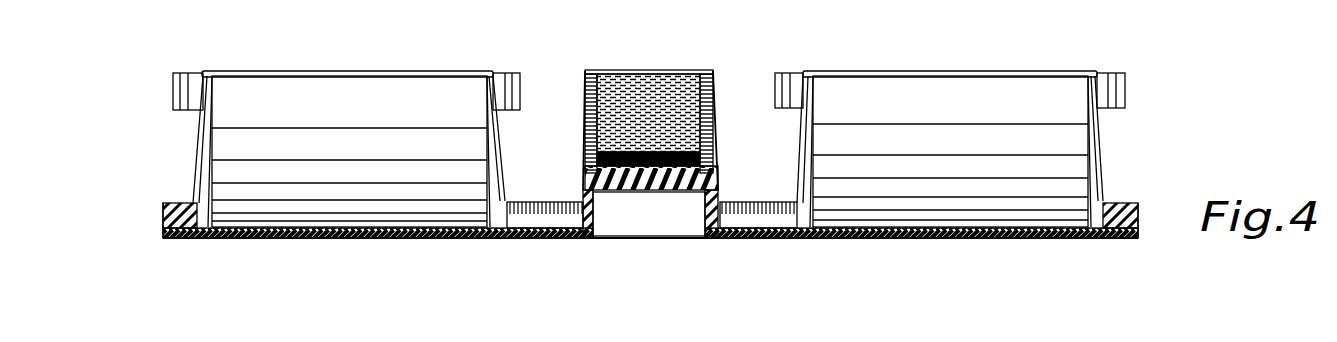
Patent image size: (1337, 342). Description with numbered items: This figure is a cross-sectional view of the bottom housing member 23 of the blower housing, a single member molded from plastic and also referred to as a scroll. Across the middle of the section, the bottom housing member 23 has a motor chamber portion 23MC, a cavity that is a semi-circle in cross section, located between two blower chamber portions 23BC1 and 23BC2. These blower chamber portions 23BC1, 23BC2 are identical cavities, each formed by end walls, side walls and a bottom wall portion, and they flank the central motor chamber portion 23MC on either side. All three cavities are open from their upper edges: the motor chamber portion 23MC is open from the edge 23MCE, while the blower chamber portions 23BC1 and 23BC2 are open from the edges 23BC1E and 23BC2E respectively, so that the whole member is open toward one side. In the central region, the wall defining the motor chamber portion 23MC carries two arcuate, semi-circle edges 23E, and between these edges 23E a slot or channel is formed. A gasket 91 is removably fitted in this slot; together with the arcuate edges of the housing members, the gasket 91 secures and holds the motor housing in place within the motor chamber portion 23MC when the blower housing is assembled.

The bottom housing member 23 is at (777, 43).
The blower chamber portion 23BC1 is at (408, 103).
The edge 23BC1E is at (296, 70).
The blower chamber portion 23BC2 is at (1037, 97).
The edge 23BC2E is at (907, 43).
The motor chamber portion 23MC is at (650, 105).
The edge 23MCE is at (637, 69).
The arcuate edge 23E is at (582, 181).
The gasket 91 is at (643, 130).